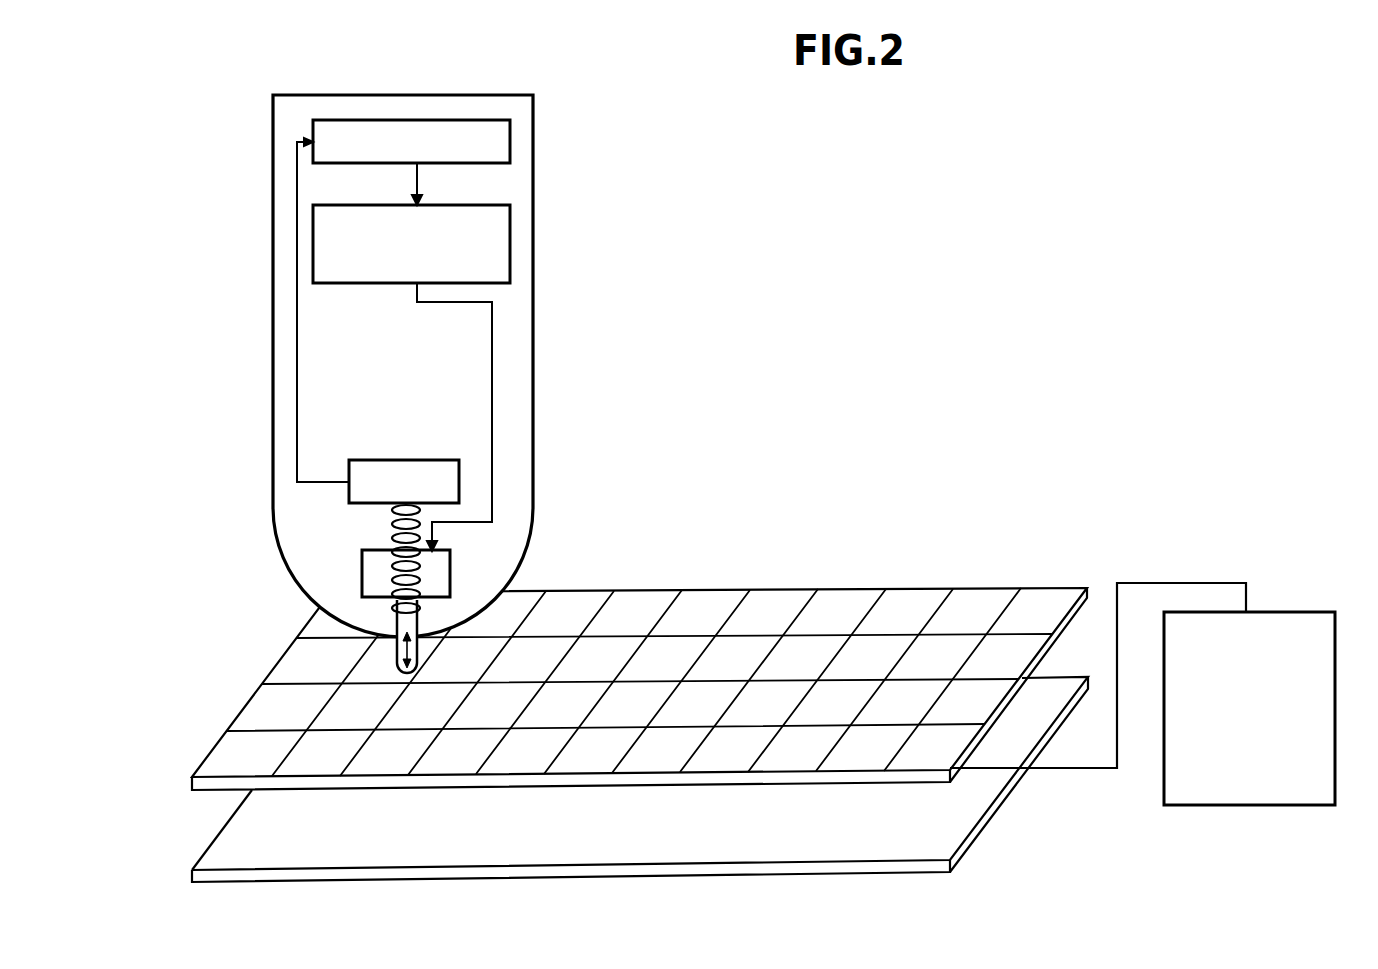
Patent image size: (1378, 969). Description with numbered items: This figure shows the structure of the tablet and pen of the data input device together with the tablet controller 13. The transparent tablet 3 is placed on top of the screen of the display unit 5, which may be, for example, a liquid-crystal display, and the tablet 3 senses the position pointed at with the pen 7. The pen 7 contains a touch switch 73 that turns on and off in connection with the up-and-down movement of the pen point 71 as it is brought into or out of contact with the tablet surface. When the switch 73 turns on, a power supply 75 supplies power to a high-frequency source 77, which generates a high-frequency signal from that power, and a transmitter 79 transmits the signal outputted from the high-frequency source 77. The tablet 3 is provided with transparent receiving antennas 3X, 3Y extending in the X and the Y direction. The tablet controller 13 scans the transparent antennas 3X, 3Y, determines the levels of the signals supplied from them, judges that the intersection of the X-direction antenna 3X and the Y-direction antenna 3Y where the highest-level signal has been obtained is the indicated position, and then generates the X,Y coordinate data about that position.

The transparent tablet 3 is at (639, 652).
The X-direction transparent receiving antenna 3X is at (896, 630).
The Y-direction transparent receiving antenna 3Y is at (943, 597).
The display unit 5 is at (973, 833).
The pen 7 is at (533, 337).
The tablet controller 13 is at (1288, 612).
The pen point 71 is at (405, 624).
The switch 73 is at (402, 459).
The power supply 75 is at (510, 143).
The high-frequency source 77 is at (510, 237).
The transmitter 79 is at (450, 572).